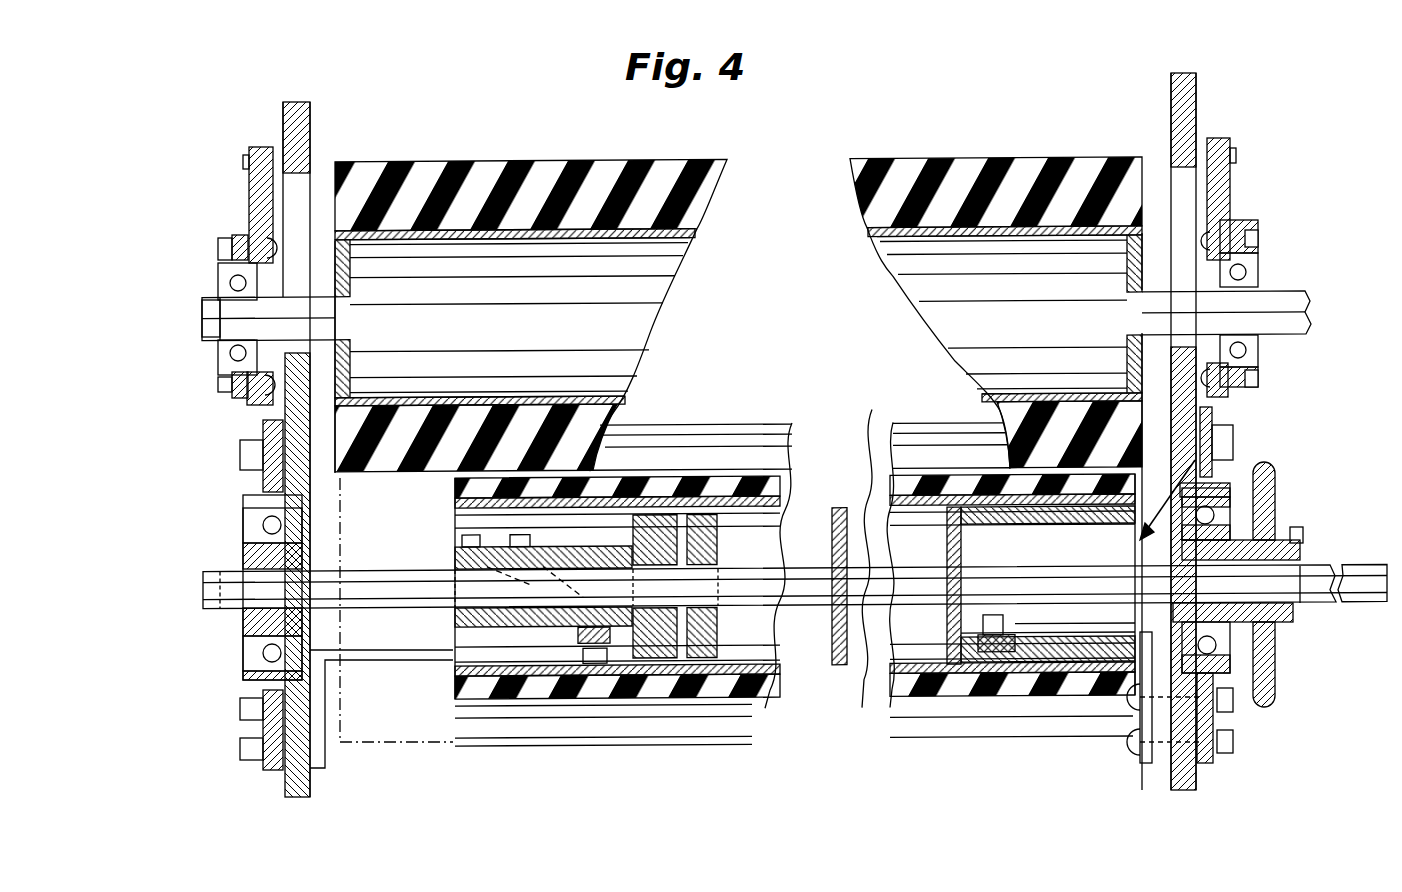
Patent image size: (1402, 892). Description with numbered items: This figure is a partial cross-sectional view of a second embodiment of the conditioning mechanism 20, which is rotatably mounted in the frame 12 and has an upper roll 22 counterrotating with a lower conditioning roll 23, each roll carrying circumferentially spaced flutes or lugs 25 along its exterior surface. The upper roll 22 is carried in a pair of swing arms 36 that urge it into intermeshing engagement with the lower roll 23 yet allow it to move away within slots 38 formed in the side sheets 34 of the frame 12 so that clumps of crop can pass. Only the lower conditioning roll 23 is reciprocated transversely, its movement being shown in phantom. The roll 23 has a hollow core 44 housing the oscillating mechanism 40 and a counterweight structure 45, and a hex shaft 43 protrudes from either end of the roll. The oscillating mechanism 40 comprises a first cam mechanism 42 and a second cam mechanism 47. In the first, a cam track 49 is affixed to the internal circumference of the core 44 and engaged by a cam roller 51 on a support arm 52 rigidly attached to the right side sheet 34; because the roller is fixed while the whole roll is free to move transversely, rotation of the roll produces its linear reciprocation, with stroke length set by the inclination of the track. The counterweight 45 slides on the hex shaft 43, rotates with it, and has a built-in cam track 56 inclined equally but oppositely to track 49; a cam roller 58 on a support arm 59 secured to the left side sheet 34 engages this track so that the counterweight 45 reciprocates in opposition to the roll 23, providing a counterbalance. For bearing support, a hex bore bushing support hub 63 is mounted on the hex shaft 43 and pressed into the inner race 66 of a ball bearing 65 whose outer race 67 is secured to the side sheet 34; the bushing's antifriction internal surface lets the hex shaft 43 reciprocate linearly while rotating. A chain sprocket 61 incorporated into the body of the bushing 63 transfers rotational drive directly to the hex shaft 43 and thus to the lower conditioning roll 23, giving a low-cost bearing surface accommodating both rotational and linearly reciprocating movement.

The frame 12 is at (310, 118).
The conditioning mechanism 20 is at (508, 100).
The upper roll 22 is at (583, 160).
The lower conditioning roll 23 is at (678, 748).
The flutes or lugs 25 is at (843, 190).
The side sheets 34 is at (1195, 112).
The swing arms 36 is at (252, 183).
The slots 38 is at (297, 213).
The oscillating mechanism 40 is at (440, 541).
The cam mechanism 42 is at (1228, 440).
The hex shaft 43 is at (1315, 605).
The hollow core 44 is at (873, 423).
The counterweight structure 45 is at (640, 655).
The second cam mechanism 47 is at (440, 630).
The cam track 49 is at (1015, 515).
The cam roller 51 is at (1000, 652).
The support arm 52 is at (1067, 625).
The cam track 56 is at (465, 535).
The cam roller 58 is at (590, 645).
The support arm 59 is at (378, 661).
The sprocket 61 is at (1276, 478).
The hex bore bushing support hub 63 is at (1290, 624).
The ball bearing 65 is at (1226, 652).
The inner race 66 is at (1160, 652).
The outer race 67 is at (1220, 483).